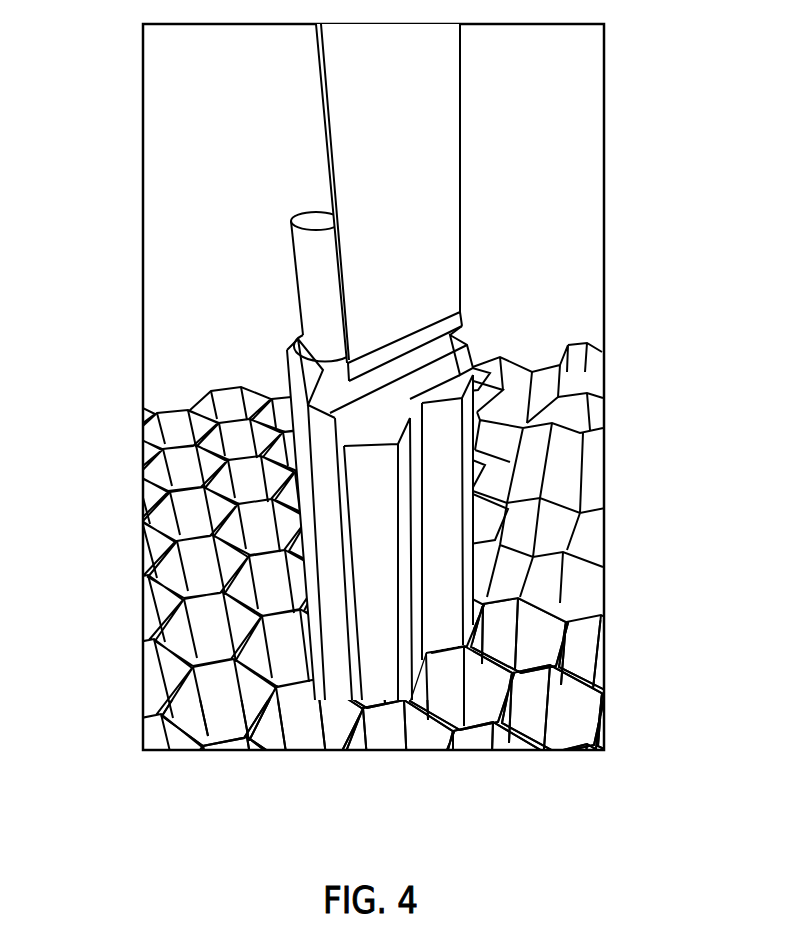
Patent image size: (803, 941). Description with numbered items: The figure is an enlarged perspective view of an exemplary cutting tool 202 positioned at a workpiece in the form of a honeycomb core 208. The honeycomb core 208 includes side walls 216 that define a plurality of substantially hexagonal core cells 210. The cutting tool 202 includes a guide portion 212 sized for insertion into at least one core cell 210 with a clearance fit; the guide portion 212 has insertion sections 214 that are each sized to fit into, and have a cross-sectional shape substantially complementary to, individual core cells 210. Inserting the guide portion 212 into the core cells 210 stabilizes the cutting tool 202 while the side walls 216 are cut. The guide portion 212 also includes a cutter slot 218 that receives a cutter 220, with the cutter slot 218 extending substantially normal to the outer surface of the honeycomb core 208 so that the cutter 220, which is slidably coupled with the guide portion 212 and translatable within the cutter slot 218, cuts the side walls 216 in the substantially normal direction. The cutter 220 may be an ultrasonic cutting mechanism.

The cutting tool 202 is at (267, 312).
The honeycomb core 208 is at (563, 298).
The core cells 210 is at (572, 378).
The guide portion 212 is at (287, 349).
The insertion sections 214 is at (390, 535).
The side walls 216 is at (578, 668).
The cutter slot 218 is at (447, 370).
The cutter 220 is at (461, 137).